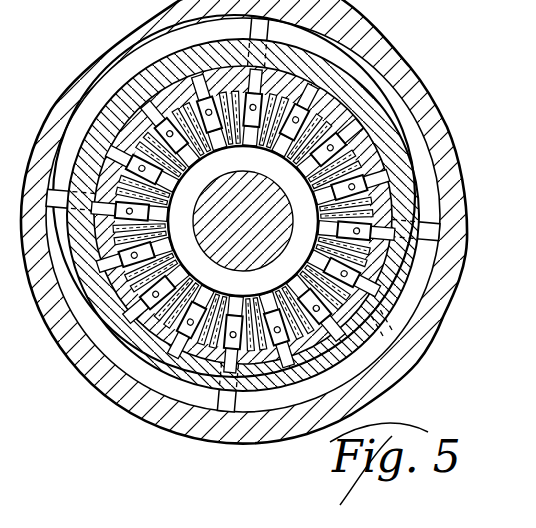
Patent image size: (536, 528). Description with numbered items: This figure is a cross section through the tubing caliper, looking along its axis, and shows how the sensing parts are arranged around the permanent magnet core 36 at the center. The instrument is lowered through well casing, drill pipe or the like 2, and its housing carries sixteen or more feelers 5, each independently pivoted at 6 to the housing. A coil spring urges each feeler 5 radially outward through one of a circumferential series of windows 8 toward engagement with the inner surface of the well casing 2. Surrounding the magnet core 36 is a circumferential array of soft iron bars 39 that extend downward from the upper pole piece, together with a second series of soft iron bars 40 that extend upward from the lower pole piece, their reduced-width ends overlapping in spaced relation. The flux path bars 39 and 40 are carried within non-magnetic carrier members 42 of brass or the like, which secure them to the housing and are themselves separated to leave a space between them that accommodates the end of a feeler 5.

The well casing 2 is at (443, 317).
The feeler 5 is at (330, 143).
The pivot 6 is at (222, 147).
The window 8 is at (390, 333).
The permanent magnet core 36 is at (228, 250).
The soft iron bar 39 is at (430, 197).
The soft iron bar 40 is at (400, 265).
The carrier member 42 is at (430, 291).